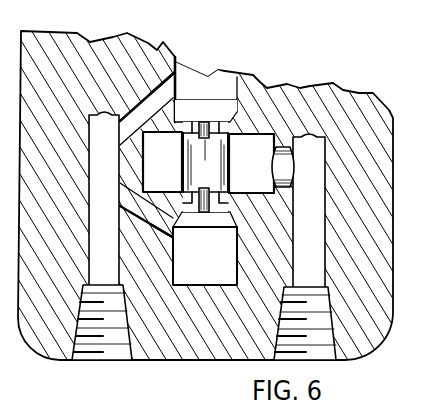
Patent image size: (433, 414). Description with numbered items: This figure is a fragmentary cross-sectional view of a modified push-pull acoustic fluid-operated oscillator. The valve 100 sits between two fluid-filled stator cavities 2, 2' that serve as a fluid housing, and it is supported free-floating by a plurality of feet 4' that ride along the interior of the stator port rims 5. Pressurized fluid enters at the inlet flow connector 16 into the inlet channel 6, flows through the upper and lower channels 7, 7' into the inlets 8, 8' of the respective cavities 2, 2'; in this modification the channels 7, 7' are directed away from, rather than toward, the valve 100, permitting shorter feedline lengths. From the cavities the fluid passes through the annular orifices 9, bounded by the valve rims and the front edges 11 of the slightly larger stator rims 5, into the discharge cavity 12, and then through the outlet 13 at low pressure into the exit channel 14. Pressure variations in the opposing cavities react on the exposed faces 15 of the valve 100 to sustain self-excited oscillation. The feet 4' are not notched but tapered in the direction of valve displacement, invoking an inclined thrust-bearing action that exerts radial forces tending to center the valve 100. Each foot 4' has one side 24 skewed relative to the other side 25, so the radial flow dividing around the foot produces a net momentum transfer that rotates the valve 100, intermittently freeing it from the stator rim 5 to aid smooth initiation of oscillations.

The stator cavity 2 is at (206, 84).
The stator cavity 2' is at (205, 256).
The foot 4' is at (212, 145).
The stator port rim 5 is at (205, 156).
The inlet channel 6 is at (104, 199).
The upper channel 7 is at (140, 110).
The lower channel 7' is at (138, 209).
The inlet 8 is at (168, 82).
The inlet 8' is at (171, 240).
The annular orifice 9 is at (227, 133).
The front edge 11 is at (173, 136).
The discharge cavity 12 is at (251, 163).
The outlet 13 is at (283, 167).
The exit channel 14 is at (305, 247).
The exposed face 15 is at (205, 167).
The inlet flow connector 16 is at (102, 314).
The side of foot 24 is at (151, 72).
The side of foot 25 is at (190, 115).
The valve 100 is at (188, 173).